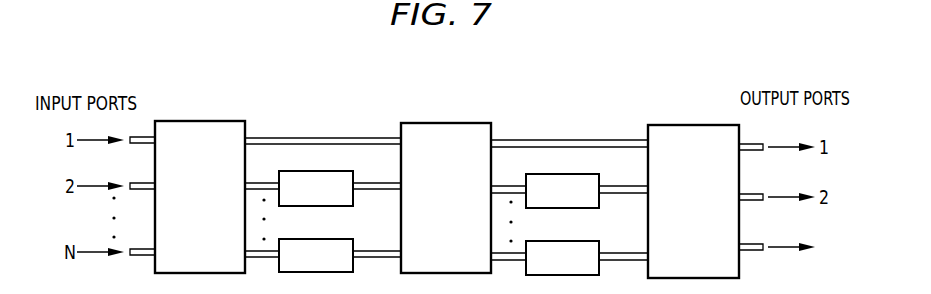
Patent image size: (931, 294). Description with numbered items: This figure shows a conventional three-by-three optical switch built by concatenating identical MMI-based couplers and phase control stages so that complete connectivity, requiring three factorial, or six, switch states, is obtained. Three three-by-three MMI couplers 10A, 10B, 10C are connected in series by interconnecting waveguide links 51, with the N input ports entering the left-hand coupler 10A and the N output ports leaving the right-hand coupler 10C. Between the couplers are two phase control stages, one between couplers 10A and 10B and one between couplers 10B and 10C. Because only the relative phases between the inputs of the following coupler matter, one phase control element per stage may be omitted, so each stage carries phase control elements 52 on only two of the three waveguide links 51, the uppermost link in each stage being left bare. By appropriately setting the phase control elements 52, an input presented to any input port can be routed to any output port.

The MMI coupler 10A is at (213, 206).
The MMI coupler 10B is at (458, 206).
The MMI coupler 10C is at (707, 208).
The connecting link 51 is at (269, 136).
The phase control element 52 is at (312, 170).